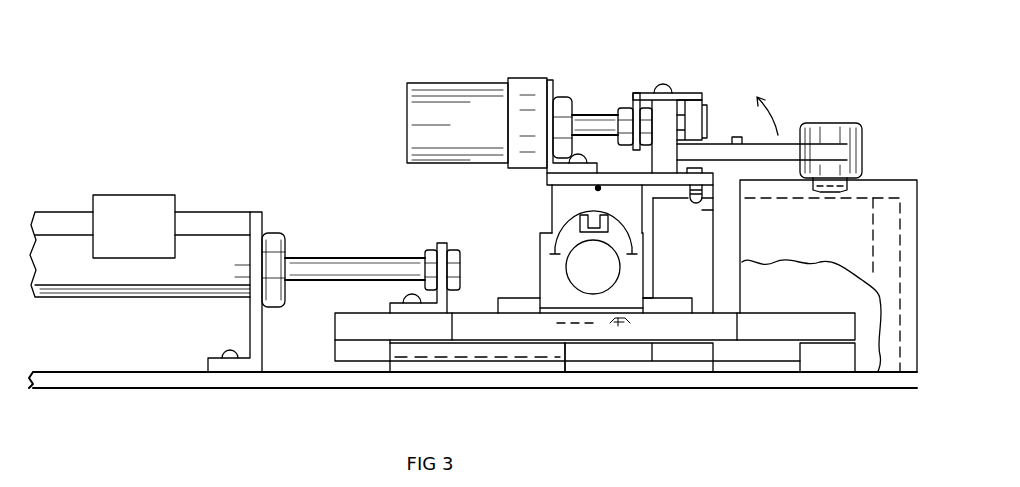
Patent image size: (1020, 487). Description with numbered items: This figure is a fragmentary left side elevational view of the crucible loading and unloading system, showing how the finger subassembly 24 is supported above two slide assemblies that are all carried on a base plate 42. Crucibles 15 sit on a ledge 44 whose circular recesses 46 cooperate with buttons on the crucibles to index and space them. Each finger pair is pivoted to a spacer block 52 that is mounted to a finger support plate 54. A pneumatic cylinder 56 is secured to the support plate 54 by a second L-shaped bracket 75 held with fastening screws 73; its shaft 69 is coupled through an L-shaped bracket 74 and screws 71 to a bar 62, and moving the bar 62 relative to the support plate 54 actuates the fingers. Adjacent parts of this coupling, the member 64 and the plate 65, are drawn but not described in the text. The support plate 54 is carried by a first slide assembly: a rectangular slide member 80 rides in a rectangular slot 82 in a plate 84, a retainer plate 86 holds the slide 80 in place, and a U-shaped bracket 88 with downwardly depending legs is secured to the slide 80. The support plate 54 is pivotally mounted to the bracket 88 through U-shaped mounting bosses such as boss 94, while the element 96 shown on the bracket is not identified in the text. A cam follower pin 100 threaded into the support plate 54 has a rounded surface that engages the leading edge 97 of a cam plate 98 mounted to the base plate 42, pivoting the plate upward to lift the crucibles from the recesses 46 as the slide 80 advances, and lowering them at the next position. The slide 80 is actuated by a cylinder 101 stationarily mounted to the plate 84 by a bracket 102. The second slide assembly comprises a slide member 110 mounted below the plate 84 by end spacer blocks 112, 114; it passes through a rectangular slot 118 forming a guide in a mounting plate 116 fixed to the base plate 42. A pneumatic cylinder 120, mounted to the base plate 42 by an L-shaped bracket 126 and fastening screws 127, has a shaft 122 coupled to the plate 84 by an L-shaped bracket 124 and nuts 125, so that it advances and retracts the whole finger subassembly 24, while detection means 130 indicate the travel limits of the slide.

The crucibles 15 is at (860, 127).
The finger subassembly 24 is at (783, 90).
The base plate 42 is at (86, 376).
The ledge 44 is at (898, 178).
The circular recesses 46 is at (837, 193).
The spacer block 52 is at (677, 157).
The finger support plate 54 is at (547, 179).
The pneumatic cylinder 56 is at (522, 83).
The bar 62 is at (697, 113).
The support column 64 is at (668, 110).
The vertical plate 65 is at (647, 112).
The shaft 69 is at (593, 122).
The screws 71 is at (663, 88).
The fastening screws 73 is at (583, 156).
The L-shaped bracket 74 is at (636, 100).
The second L-shaped bracket 75 is at (550, 85).
The slide member 80 is at (600, 317).
The rectangular slot 82 is at (617, 318).
The plate 84 is at (473, 328).
The retainer plate 86 is at (507, 303).
The U-shaped bracket 88 is at (545, 228).
The U-shaped mounting boss 94 is at (552, 193).
The slot 96 is at (597, 189).
The leading edge 97 is at (707, 205).
The cam plate 98 is at (713, 230).
The cam follower pin 100 is at (692, 204).
The cylinder 101 is at (610, 273).
The bracket 102 is at (550, 268).
The slide member 110 is at (684, 362).
The end spacer block 112 is at (355, 350).
The end spacer block 114 is at (826, 357).
The mounting plate 116 is at (549, 363).
The rectangular slot 118 is at (516, 350).
The pneumatic cylinder 120 is at (225, 214).
The shaft 122 is at (330, 262).
The L-shaped bracket 124 is at (445, 250).
The nuts 125 is at (430, 251).
The L-shaped bracket 126 is at (260, 342).
The fastening screws 127 is at (222, 349).
The detection means 130 is at (143, 200).